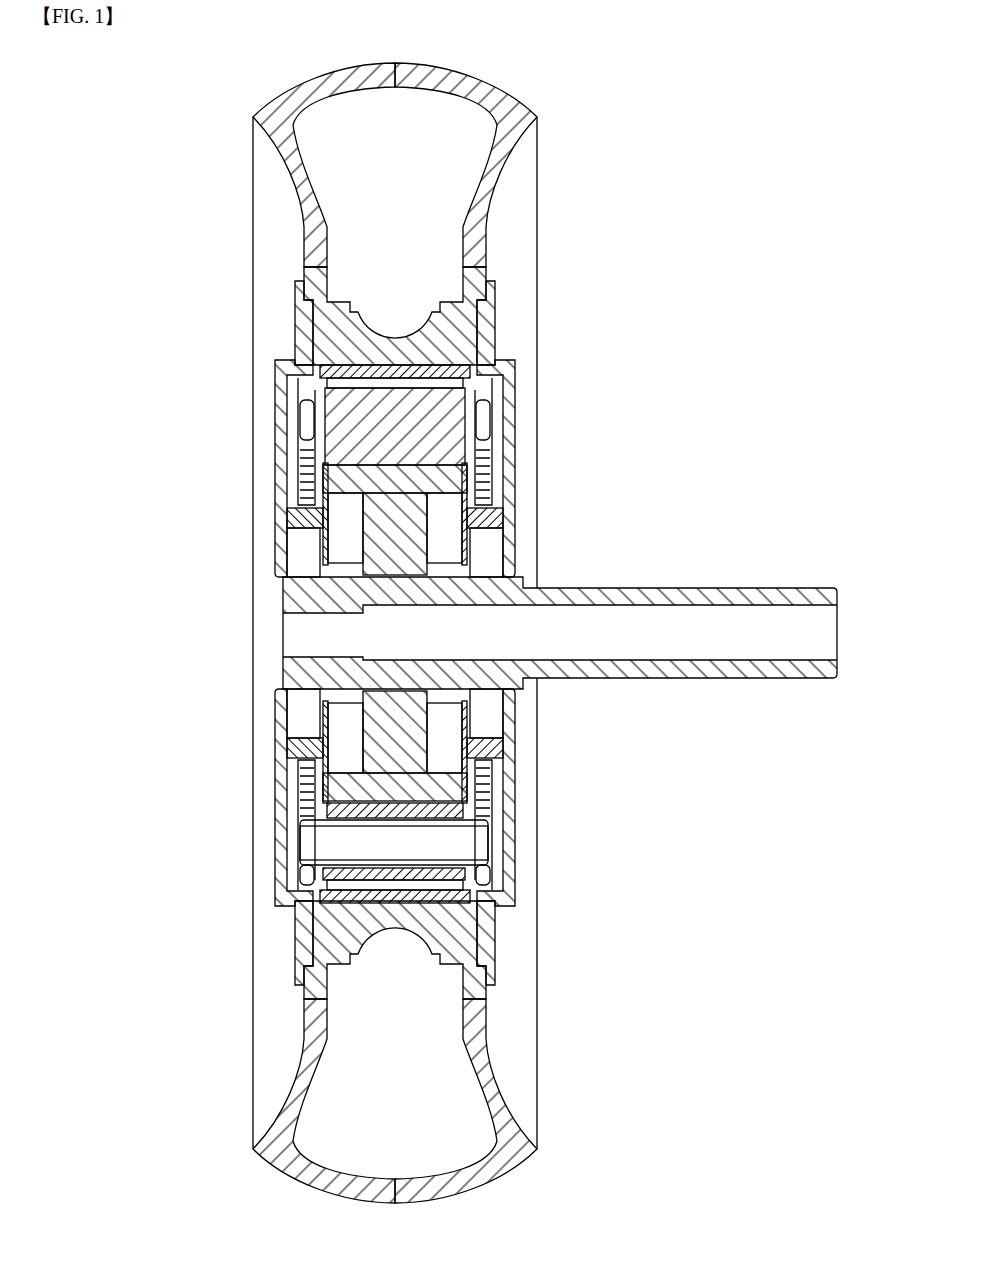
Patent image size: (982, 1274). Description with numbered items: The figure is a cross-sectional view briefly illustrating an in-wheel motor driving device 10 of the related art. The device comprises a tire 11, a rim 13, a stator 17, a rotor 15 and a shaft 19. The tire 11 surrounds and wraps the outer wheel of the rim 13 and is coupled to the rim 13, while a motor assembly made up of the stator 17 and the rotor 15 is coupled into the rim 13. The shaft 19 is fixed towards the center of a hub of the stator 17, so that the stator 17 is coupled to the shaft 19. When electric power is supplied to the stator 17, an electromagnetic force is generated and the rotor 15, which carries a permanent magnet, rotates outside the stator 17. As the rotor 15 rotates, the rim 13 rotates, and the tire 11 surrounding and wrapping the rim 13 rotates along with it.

The in-wheel motor driving device 10 is at (192, 126).
The tire 11 is at (522, 177).
The rim 13 is at (455, 336).
The rotor 15 is at (455, 372).
The stator 17 is at (473, 841).
The shaft 19 is at (707, 593).